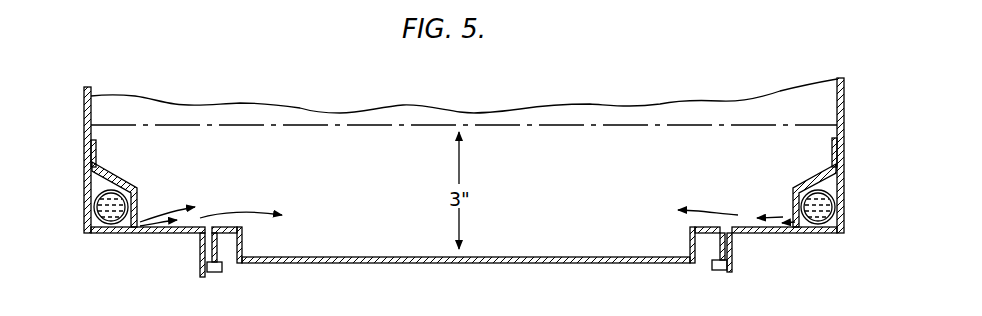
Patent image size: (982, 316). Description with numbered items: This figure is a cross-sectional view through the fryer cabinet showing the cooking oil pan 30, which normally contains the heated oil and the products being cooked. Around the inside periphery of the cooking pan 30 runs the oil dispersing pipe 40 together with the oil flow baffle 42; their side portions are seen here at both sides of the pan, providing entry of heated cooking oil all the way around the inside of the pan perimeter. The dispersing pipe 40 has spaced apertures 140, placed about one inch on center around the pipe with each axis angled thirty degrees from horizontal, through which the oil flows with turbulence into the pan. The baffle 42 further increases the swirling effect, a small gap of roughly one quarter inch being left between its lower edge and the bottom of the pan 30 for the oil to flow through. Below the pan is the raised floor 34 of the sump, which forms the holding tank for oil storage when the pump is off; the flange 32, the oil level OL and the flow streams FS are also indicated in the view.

The oil dispersing pipe 40 is at (838, 186).
The oil flow baffle 42 is at (111, 182).
The apertures 140 is at (127, 228).
The cooking oil pan 30 is at (523, 263).
The upturned flange 32 is at (710, 227).
The raised floor 34 is at (714, 248).
The operating level OL is at (483, 124).
The flow stream FS is at (237, 212).